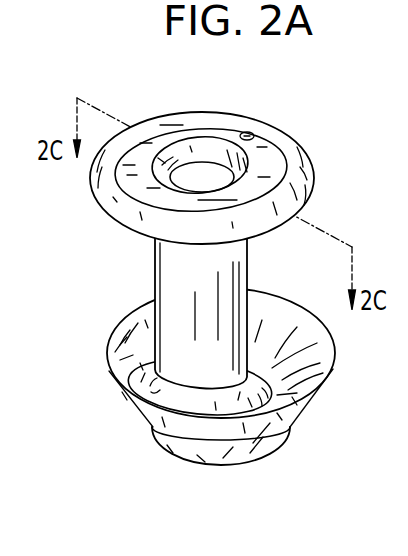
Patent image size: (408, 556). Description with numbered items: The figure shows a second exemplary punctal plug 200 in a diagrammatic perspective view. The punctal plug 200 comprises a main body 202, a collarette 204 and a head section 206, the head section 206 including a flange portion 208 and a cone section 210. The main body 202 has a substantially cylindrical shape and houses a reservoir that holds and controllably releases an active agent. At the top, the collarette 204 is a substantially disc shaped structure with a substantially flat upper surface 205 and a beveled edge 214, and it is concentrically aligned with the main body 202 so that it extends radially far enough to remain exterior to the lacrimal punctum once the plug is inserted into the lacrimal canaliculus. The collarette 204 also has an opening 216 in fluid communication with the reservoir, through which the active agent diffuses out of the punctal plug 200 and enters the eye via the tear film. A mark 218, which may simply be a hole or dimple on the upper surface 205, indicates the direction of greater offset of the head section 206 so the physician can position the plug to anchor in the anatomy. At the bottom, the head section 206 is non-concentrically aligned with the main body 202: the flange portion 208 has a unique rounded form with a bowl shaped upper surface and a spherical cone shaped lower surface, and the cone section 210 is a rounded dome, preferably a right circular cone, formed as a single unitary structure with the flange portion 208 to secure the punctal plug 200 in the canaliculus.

The punctal plug 200 is at (112, 276).
The main body 202 is at (250, 262).
The collarette 204 is at (293, 140).
The upper surface 205 is at (130, 172).
The head section 206 is at (105, 470).
The flange portion 208 is at (333, 350).
The cone section 210 is at (277, 443).
The beveled edge 214 is at (112, 225).
The opening 216 is at (212, 166).
The mark 218 is at (248, 132).